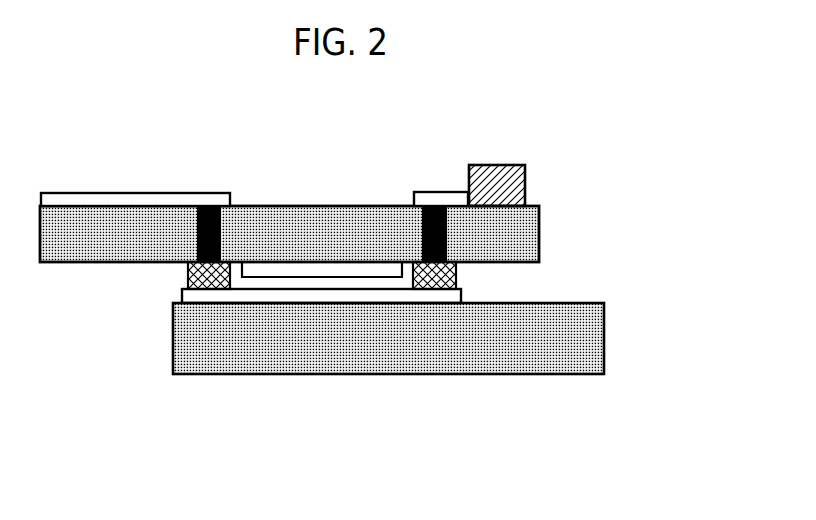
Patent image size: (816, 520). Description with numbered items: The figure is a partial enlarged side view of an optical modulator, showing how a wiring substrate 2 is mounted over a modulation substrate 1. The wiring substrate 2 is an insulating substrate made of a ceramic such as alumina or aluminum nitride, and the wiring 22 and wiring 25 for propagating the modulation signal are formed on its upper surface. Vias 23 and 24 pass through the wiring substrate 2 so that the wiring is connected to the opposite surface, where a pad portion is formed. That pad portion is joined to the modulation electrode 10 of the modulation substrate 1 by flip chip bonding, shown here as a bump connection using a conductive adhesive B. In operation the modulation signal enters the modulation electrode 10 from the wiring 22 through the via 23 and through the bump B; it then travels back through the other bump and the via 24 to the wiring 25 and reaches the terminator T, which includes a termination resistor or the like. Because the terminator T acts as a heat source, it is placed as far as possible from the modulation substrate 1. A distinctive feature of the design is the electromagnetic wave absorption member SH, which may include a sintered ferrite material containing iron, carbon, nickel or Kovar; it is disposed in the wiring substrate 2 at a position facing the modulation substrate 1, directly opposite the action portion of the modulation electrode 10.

The modulation substrate 1 is at (457, 353).
The modulation electrode 10 is at (461, 292).
The wiring substrate 2 is at (380, 220).
The wiring 22 is at (197, 202).
The via 23 is at (195, 247).
The via 24 is at (447, 238).
The wiring 25 is at (437, 195).
The electromagnetic wave absorption member SH is at (312, 271).
The conductive adhesive bump B is at (187, 274).
The terminator T is at (505, 172).